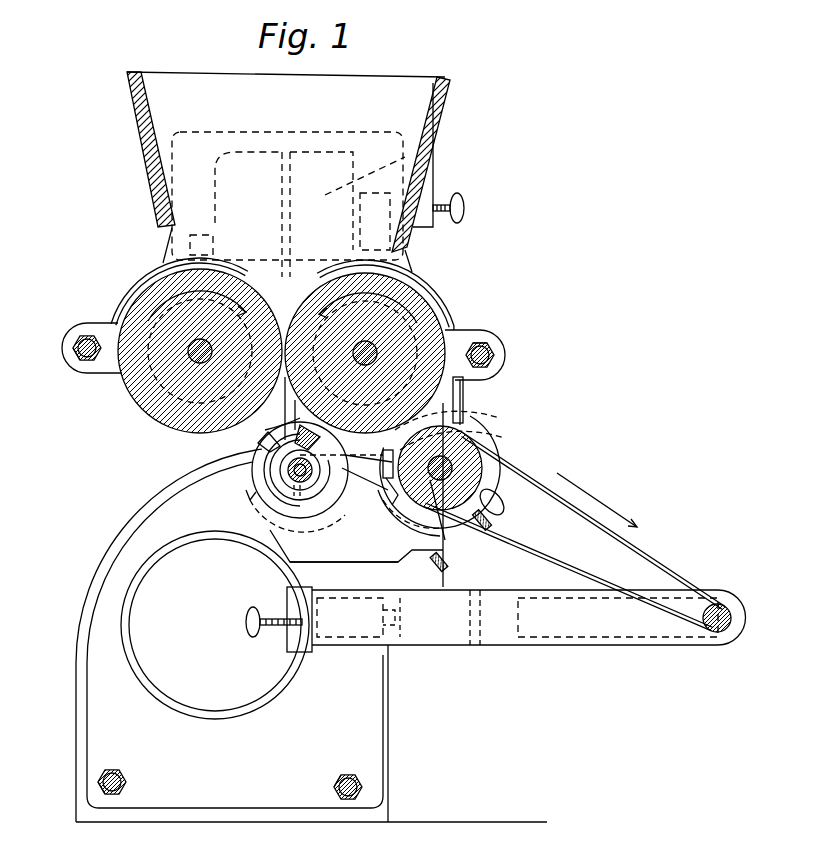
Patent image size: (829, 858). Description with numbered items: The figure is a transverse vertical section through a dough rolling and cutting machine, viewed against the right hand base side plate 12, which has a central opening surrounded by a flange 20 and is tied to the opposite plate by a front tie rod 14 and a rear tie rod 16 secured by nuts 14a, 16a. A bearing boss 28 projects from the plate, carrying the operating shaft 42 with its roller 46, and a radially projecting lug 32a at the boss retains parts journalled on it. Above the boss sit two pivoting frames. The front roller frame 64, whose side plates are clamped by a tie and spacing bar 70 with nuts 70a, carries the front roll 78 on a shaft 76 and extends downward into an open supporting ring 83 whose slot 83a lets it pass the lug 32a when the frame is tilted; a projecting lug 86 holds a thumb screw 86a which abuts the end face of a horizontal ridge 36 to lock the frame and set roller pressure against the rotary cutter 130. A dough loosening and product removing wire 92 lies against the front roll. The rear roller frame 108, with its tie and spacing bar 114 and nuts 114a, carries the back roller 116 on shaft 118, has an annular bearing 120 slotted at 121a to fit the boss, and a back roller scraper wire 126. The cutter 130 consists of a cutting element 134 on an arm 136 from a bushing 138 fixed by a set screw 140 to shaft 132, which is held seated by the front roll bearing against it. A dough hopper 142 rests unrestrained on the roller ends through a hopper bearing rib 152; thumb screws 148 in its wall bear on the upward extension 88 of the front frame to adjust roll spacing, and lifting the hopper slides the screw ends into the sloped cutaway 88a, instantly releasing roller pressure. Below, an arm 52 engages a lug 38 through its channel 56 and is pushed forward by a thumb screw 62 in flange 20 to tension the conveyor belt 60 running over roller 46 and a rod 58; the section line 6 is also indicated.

The right hand base side plate 12 is at (120, 708).
The flange 20 is at (229, 716).
The rear tie rod 16 is at (128, 757).
The nut 16a is at (126, 782).
The front tie rod 14 is at (350, 774).
The nut 14a is at (336, 781).
The upward extension 88 is at (428, 161).
The dough hopper 142 is at (165, 101).
The cutaway 88a is at (325, 172).
The thumb screw 148 is at (466, 208).
The hopper bearing rib 152 is at (165, 262).
The back roller 116 is at (152, 277).
The shaft 118 is at (196, 348).
The rear roller frame 108 is at (104, 378).
The tie and spacing bar 114 is at (80, 345).
The nut 114a is at (76, 360).
The shaft 76 is at (445, 322).
The front roll 78 is at (368, 351).
The front roller frame 64 is at (466, 318).
The tie and spacing bar 70 is at (494, 356).
The nut 70a is at (490, 344).
The dough loosening and product removing wire 92 is at (464, 392).
The section line 6 is at (447, 408).
The bearing boss 28 is at (441, 512).
The operating shaft 42 is at (455, 457).
The radial slot 121a is at (500, 418).
The radially projecting lug 32a is at (505, 438).
The roller 46 is at (500, 488).
The thumb screw 86a is at (488, 522).
The projecting lug 86 is at (467, 525).
The open supporting ring 83 is at (405, 523).
The slot 83a is at (385, 478).
The annular bearing 120 is at (392, 505).
The horizontal ridge 36 is at (344, 552).
The conveyor belt 60 is at (655, 564).
The rod 58 is at (728, 611).
The arm 52 is at (568, 645).
The channel 56 is at (356, 645).
The lug 38 is at (470, 622).
The thumb screw 62 is at (272, 614).
The rotary cutter 130 is at (252, 454).
The shaft 132 is at (300, 500).
The bushing 138 is at (293, 471).
The set screw 140 is at (277, 511).
The cutting element 134 is at (260, 442).
The arm 136 is at (317, 437).
The back roller scraper wire 126 is at (281, 408).